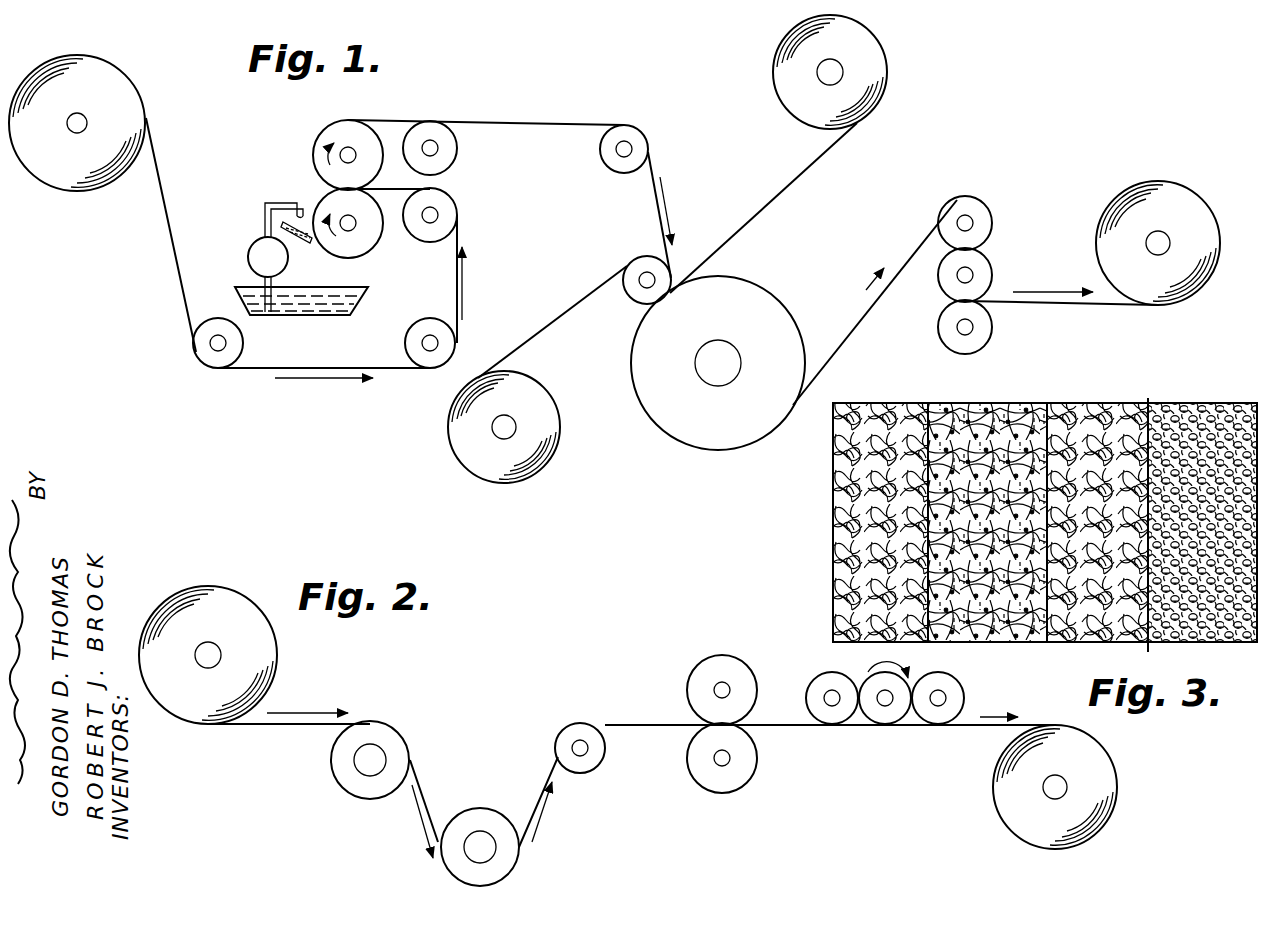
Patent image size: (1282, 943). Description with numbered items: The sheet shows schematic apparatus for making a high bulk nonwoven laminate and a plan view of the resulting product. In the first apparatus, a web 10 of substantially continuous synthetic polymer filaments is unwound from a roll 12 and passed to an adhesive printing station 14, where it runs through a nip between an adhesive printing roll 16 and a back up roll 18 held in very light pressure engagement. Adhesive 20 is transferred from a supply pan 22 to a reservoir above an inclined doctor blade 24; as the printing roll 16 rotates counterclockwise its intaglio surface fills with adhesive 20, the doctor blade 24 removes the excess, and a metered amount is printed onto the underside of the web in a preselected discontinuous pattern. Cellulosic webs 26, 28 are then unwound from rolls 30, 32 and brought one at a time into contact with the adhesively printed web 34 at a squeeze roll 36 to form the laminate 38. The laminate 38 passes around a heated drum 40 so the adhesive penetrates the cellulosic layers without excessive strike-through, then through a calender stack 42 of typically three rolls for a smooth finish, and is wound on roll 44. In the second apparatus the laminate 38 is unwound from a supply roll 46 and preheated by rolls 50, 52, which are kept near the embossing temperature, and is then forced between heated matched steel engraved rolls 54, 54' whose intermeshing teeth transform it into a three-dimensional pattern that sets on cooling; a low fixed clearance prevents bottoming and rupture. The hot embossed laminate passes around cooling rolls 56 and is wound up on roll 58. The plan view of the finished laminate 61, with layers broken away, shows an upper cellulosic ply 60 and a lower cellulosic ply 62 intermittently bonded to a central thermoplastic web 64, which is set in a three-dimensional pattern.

In FIG. 1, the web 10 is at (172, 242).
In FIG. 1, the roll 12 is at (42, 178).
In FIG. 1, the adhesive printing station 14 is at (305, 136).
In FIG. 1, the adhesive printing roll 16 is at (372, 242).
In FIG. 1, the back up roll 18 is at (358, 134).
In FIG. 1, the adhesive 20 is at (290, 306).
In FIG. 1, the supply pan 22 is at (358, 306).
In FIG. 1, the inclined doctor blade 24 is at (281, 232).
In FIG. 1, the cellulosic web 26 is at (572, 320).
In FIG. 1, the cellulosic web 28 is at (789, 192).
In FIG. 1, the roll 30 is at (469, 454).
In FIG. 1, the roll 32 is at (880, 66).
In FIG. 1, the adhesively printed web 34 is at (657, 203).
In FIG. 1, the squeeze roll 36 is at (628, 302).
In FIG. 1, the laminate 38 is at (632, 345).
In FIG. 2, the laminate 38 is at (300, 726).
In FIG. 1, the heated drum 40 is at (698, 430).
In FIG. 1, the calender stack 42 is at (974, 192).
In FIG. 1, the roll 44 is at (1181, 196).
In FIG. 2, the supply roll 46 is at (221, 599).
In FIG. 2, the roll 50 is at (382, 738).
In FIG. 2, the roll 52 is at (494, 821).
In FIG. 2, the matched steel engraved roll 54 is at (709, 770).
In FIG. 2, the matched steel engraved roll 54' is at (722, 680).
In FIG. 2, the cooling rolls 56 is at (892, 734).
In FIG. 2, the roll 58 is at (1112, 786).
In FIG. 3, the upper cellulosic ply 60 is at (893, 389).
In FIG. 3, the laminate 61 is at (1230, 389).
In FIG. 3, the lower cellulosic ply 62 is at (1110, 389).
In FIG. 3, the central thermoplastic web 64 is at (1013, 641).